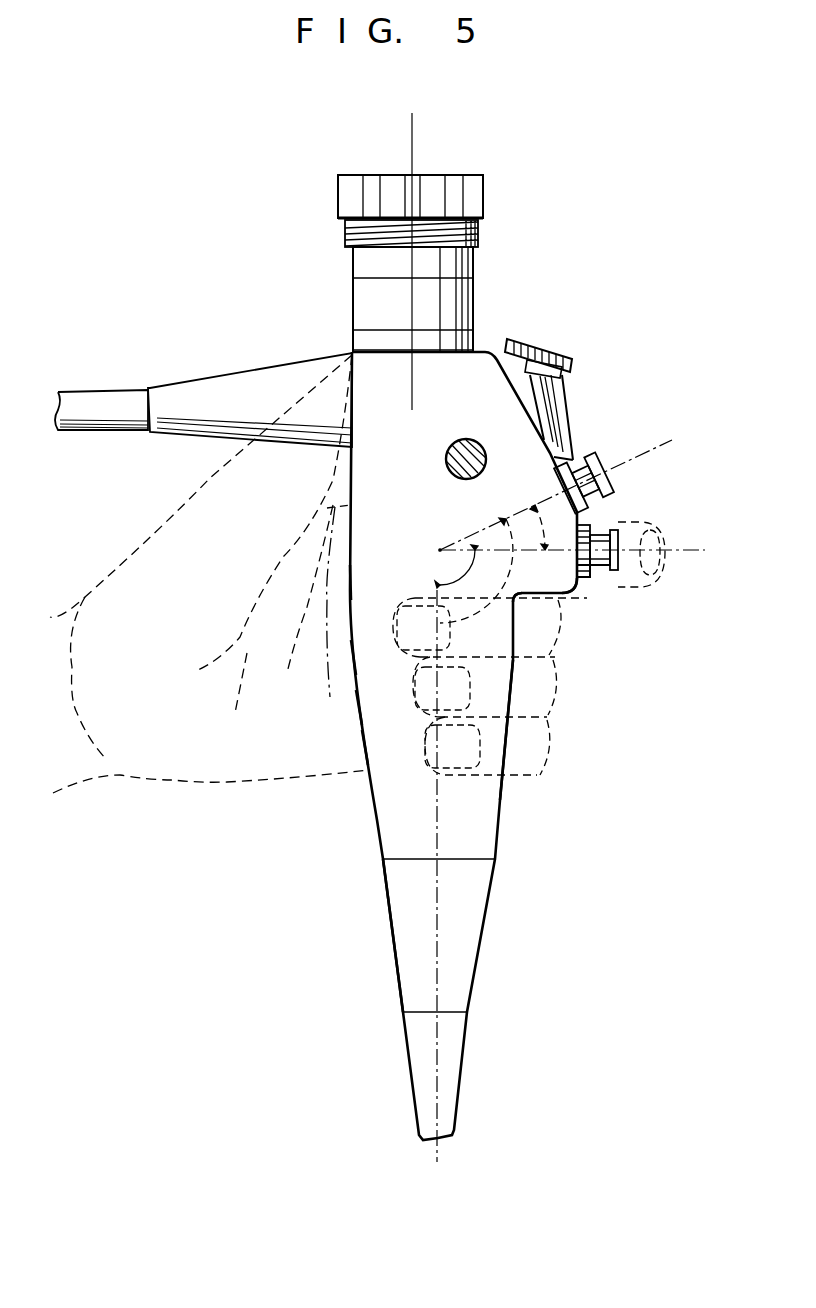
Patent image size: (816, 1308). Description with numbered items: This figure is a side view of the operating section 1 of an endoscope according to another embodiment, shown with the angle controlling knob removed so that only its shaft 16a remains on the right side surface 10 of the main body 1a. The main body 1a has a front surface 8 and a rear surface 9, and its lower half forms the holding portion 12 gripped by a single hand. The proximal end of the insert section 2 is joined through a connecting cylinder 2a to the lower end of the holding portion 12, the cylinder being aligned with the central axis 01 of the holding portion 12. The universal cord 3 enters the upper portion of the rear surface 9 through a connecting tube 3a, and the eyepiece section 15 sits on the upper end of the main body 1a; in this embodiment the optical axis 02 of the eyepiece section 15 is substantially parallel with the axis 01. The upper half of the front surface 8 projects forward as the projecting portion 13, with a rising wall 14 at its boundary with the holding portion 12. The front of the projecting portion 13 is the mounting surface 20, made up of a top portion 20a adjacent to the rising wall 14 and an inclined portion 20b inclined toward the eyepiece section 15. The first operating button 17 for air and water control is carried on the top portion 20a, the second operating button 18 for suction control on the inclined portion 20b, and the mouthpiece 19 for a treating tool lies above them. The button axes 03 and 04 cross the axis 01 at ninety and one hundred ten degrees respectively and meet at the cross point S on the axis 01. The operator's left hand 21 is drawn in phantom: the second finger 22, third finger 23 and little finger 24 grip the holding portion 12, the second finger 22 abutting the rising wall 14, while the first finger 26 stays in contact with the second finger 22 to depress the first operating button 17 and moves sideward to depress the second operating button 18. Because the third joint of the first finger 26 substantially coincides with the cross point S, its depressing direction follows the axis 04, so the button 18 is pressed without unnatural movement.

The operating section 1 is at (378, 360).
The main body 1a is at (375, 745).
The insert section 2 is at (475, 1045).
The connecting cylinder 2a is at (400, 956).
The universal cord 3 is at (92, 392).
The connecting tube 3a is at (196, 390).
The front surface 8 is at (514, 675).
The rear surface 9 is at (352, 659).
The right side surface 10 is at (355, 580).
The holding portion 12 is at (370, 708).
The projecting portion 13 is at (578, 593).
The rising wall 14 is at (533, 598).
The eyepiece section 15 is at (470, 178).
The shaft 16a is at (447, 462).
The first operating button 17 is at (598, 570).
The second operating button 18 is at (612, 480).
The mouthpiece 19 is at (540, 348).
The mounting surface 20 is at (585, 524).
The top portion 20a is at (585, 575).
The inclined portion 20b is at (568, 431).
The left hand 21 is at (172, 770).
The second finger 22 is at (549, 645).
The third finger 23 is at (549, 693).
The little finger 24 is at (545, 742).
The first finger 26 is at (655, 534).
The central axis of the holding portion 01 is at (440, 815).
The optical axis of the eyepiece section 02 is at (416, 153).
The central axis of the first operating button 03 is at (688, 551).
The central axis of the second operating button 04 is at (651, 448).
The cross point S is at (438, 549).